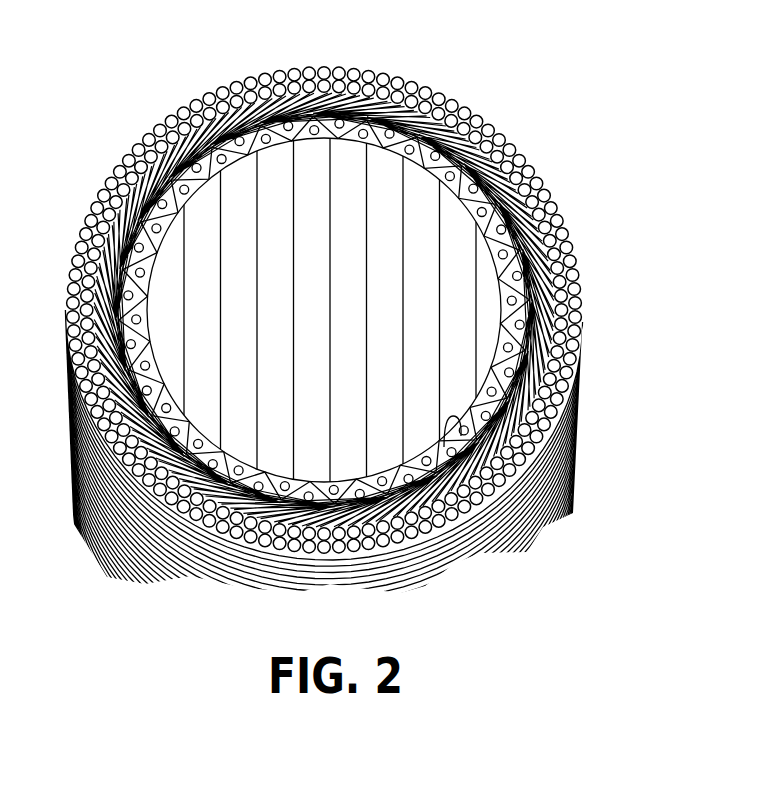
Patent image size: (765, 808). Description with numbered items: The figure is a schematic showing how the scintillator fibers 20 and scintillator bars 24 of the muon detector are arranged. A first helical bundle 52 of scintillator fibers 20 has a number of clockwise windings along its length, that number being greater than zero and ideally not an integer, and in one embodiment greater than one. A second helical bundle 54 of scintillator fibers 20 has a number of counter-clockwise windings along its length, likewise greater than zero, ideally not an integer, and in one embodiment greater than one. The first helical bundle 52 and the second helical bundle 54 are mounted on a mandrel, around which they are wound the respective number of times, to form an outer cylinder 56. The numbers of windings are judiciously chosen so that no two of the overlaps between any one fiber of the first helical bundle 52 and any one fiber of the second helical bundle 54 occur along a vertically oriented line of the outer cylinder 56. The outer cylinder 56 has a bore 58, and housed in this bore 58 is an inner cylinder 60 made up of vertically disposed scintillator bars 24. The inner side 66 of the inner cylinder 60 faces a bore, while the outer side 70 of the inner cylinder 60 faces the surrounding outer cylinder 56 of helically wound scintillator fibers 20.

The scintillator fibers 20 is at (355, 310).
The scintillator bars 24 is at (513, 380).
The first helical bundle 52 is at (355, 310).
The second helical bundle 54 is at (552, 223).
The outer cylinder 56 is at (495, 123).
The bore 58 is at (540, 297).
The inner cylinder 60 is at (527, 347).
The inner side 66 is at (458, 472).
The outer side 70 is at (510, 418).